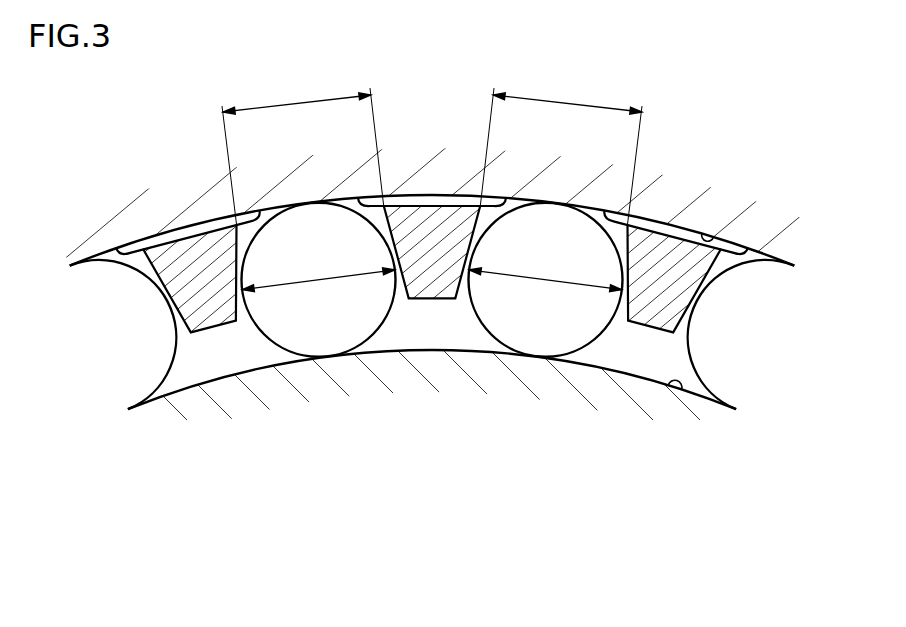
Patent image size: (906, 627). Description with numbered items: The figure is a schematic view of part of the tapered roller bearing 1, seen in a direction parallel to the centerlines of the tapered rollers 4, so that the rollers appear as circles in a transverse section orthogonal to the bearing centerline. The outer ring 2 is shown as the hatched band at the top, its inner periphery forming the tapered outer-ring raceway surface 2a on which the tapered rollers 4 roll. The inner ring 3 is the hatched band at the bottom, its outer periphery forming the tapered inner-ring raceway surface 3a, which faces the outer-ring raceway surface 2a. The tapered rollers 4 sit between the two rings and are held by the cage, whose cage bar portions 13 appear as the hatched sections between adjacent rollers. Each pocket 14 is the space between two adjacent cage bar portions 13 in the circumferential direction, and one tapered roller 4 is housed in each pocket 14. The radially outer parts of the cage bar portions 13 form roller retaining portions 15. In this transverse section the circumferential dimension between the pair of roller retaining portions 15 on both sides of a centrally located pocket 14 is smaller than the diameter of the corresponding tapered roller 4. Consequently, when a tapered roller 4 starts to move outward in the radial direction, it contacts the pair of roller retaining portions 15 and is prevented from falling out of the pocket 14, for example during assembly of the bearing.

The tapered roller bearing 1 is at (151, 466).
The outer ring 2 is at (465, 186).
The outer-ring raceway surface 2a is at (711, 233).
The inner ring 3 is at (413, 363).
The inner-ring raceway surface 3a is at (681, 382).
The tapered roller 4 is at (293, 323).
The cage bar portion 13 is at (198, 267).
The pocket 14 is at (341, 314).
The roller retaining portion 15 is at (124, 240).